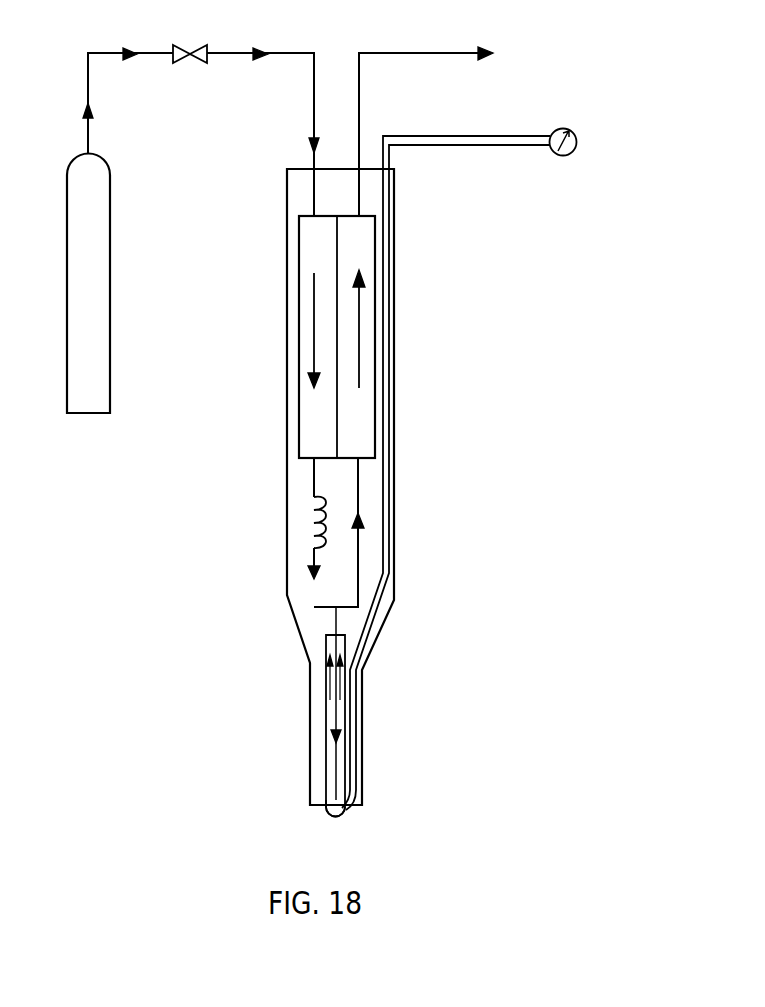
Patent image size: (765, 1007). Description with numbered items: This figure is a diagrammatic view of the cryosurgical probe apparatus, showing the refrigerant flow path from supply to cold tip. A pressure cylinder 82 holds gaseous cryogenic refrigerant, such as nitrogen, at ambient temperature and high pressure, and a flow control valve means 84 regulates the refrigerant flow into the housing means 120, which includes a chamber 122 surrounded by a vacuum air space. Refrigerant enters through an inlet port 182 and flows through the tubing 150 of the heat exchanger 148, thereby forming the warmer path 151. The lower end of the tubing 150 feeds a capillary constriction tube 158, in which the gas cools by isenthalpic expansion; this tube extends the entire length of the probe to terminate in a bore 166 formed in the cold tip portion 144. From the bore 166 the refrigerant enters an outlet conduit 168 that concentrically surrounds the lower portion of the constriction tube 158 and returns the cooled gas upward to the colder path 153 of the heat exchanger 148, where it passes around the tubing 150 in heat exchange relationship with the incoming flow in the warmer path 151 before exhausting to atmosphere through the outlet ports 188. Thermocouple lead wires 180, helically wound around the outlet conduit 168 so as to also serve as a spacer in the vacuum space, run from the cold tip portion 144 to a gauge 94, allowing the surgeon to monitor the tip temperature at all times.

The pressure cylinder 82 is at (110, 263).
The flow control valve means 84 is at (190, 46).
The gauge 94 is at (577, 147).
The housing means 120 is at (400, 607).
The chamber 122 is at (343, 202).
The cold tip portion 144 is at (342, 810).
The heat exchanger 148 is at (300, 217).
The tubing 150 is at (313, 203).
The warmer path 151 is at (313, 343).
The colder path 153 is at (359, 350).
The capillary constriction tube 158 is at (307, 518).
The bore 166 is at (327, 807).
The outlet conduit 168 is at (330, 642).
The lead wires 180 is at (387, 560).
The inlet port 182 is at (313, 168).
The outlet ports 188 is at (360, 167).